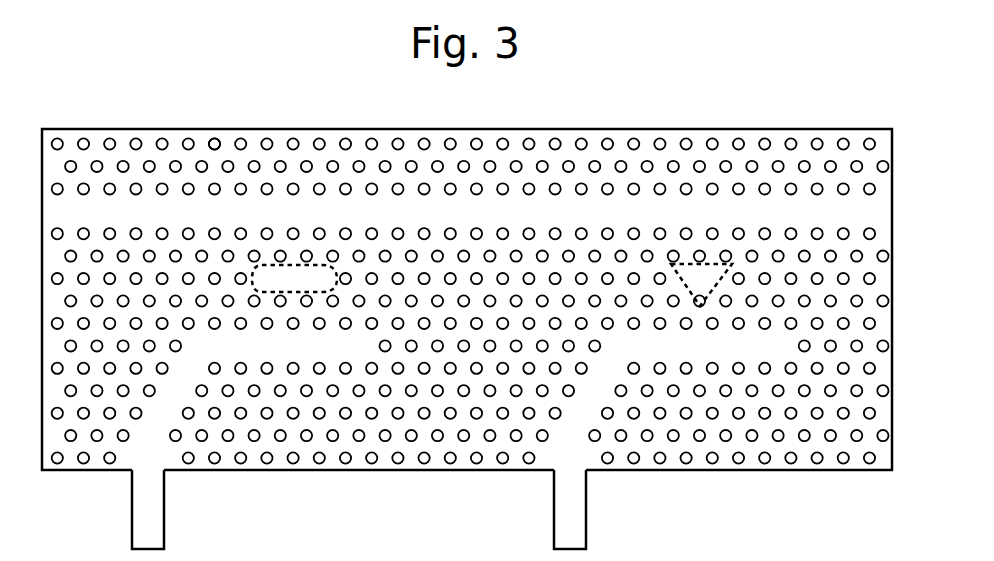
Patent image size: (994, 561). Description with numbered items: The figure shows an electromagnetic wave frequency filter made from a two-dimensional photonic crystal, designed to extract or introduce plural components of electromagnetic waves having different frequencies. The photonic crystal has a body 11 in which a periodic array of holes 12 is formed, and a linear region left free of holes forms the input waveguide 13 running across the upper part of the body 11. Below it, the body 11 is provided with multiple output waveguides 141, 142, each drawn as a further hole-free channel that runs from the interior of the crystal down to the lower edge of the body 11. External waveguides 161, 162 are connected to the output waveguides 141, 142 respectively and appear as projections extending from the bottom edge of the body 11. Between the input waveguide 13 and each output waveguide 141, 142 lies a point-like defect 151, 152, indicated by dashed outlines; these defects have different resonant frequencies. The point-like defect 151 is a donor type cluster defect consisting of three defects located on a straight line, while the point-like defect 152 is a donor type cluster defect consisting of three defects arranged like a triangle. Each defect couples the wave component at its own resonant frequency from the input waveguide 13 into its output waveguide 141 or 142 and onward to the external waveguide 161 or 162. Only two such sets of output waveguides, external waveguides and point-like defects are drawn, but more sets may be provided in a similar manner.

The body 11 is at (176, 150).
The holes 12 is at (215, 144).
The input waveguide 13 is at (538, 210).
The output waveguide 141 is at (335, 350).
The output waveguide 142 is at (718, 350).
The point-like defect 151 is at (306, 282).
The point-like defect 152 is at (692, 282).
The external waveguide 161 is at (143, 485).
The external waveguide 162 is at (567, 486).